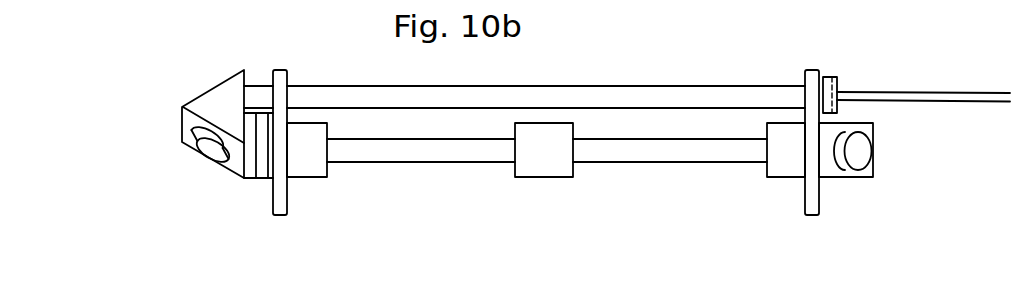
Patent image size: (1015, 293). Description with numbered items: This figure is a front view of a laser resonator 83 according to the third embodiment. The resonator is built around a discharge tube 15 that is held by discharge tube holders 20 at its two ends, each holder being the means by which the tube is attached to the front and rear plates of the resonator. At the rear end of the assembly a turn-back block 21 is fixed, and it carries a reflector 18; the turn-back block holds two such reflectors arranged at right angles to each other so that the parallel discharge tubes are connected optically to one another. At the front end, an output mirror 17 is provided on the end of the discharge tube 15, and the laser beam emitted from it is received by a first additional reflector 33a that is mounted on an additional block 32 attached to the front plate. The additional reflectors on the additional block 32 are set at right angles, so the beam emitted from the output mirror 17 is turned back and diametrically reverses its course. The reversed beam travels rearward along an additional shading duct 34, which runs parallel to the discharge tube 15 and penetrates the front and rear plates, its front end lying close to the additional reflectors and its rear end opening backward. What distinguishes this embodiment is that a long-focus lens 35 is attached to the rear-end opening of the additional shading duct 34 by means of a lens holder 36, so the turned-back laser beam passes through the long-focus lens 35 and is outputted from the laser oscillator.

The laser resonator 83 is at (703, 75).
The additional block 32 is at (208, 100).
The first additional reflector 33a is at (204, 165).
The output mirror 17 is at (263, 172).
The additional shading duct 34 is at (530, 95).
The discharge tube holder 20 is at (315, 167).
The discharge tube 15 is at (465, 152).
The long-focus lens 35 is at (829, 77).
The lens holder 36 is at (838, 85).
The turn-back block 21 is at (837, 173).
The reflector 18 is at (863, 153).